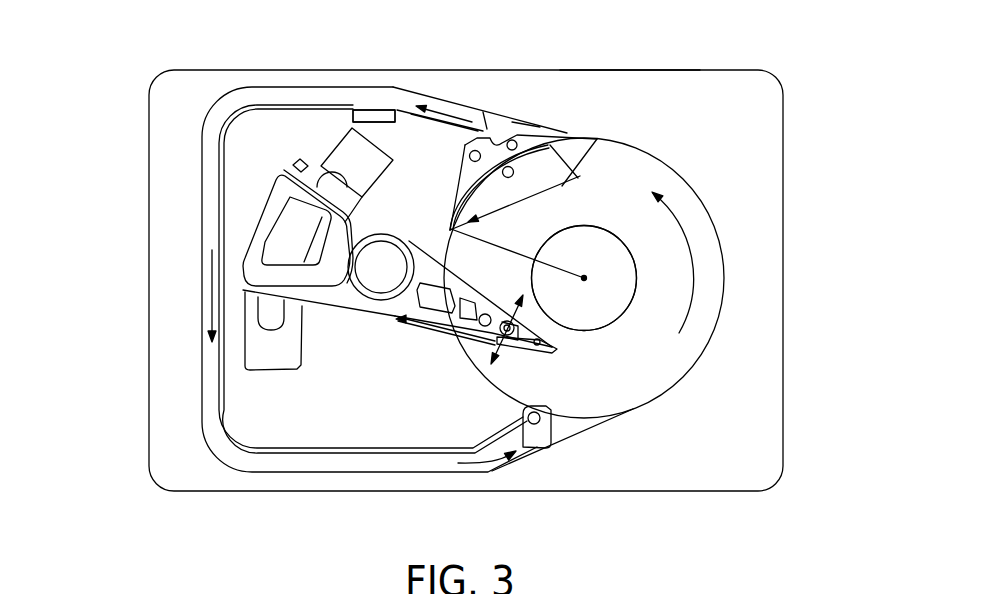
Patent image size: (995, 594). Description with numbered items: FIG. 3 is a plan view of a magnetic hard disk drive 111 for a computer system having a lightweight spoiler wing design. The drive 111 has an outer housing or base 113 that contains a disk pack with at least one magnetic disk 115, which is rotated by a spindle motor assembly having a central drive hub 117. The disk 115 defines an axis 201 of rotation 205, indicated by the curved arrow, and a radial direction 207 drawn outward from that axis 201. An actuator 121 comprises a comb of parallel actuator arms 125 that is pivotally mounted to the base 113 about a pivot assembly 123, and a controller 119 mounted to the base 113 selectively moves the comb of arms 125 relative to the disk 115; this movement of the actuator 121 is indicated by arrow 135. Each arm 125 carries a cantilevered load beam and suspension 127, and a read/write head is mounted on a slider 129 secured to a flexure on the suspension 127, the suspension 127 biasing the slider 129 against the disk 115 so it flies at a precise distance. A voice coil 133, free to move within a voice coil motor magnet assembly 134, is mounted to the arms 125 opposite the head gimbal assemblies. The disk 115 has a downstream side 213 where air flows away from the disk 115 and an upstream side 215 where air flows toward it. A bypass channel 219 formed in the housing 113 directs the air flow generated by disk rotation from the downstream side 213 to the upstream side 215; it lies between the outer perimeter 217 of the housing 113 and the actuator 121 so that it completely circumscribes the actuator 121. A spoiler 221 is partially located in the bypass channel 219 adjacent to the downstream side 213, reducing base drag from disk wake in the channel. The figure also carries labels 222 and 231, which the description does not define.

The disk drive 111 is at (468, 245).
The base 113 is at (626, 70).
The magnetic disk 115 is at (658, 178).
The central drive hub 117 is at (640, 300).
The controller 119 is at (384, 126).
The actuator 121 is at (413, 337).
The pivot assembly 123 is at (373, 312).
The actuator arm 125 is at (431, 251).
The suspension 127 is at (494, 362).
The slider 129 is at (553, 350).
The voice coil 133 is at (264, 191).
The voice coil motor magnet assembly 134 is at (343, 153).
The arrow 135 is at (470, 334).
The axis 201 is at (606, 252).
The rotation 205 is at (697, 263).
The radial direction 207 is at (508, 231).
The downstream side 213 is at (563, 133).
The upstream side 215 is at (588, 418).
The outer perimeter 217 is at (148, 143).
The bypass channel 219 is at (281, 97).
The spoiler 221 is at (502, 114).
The filter block 222 is at (388, 108).
The ramp surface 231 is at (594, 138).